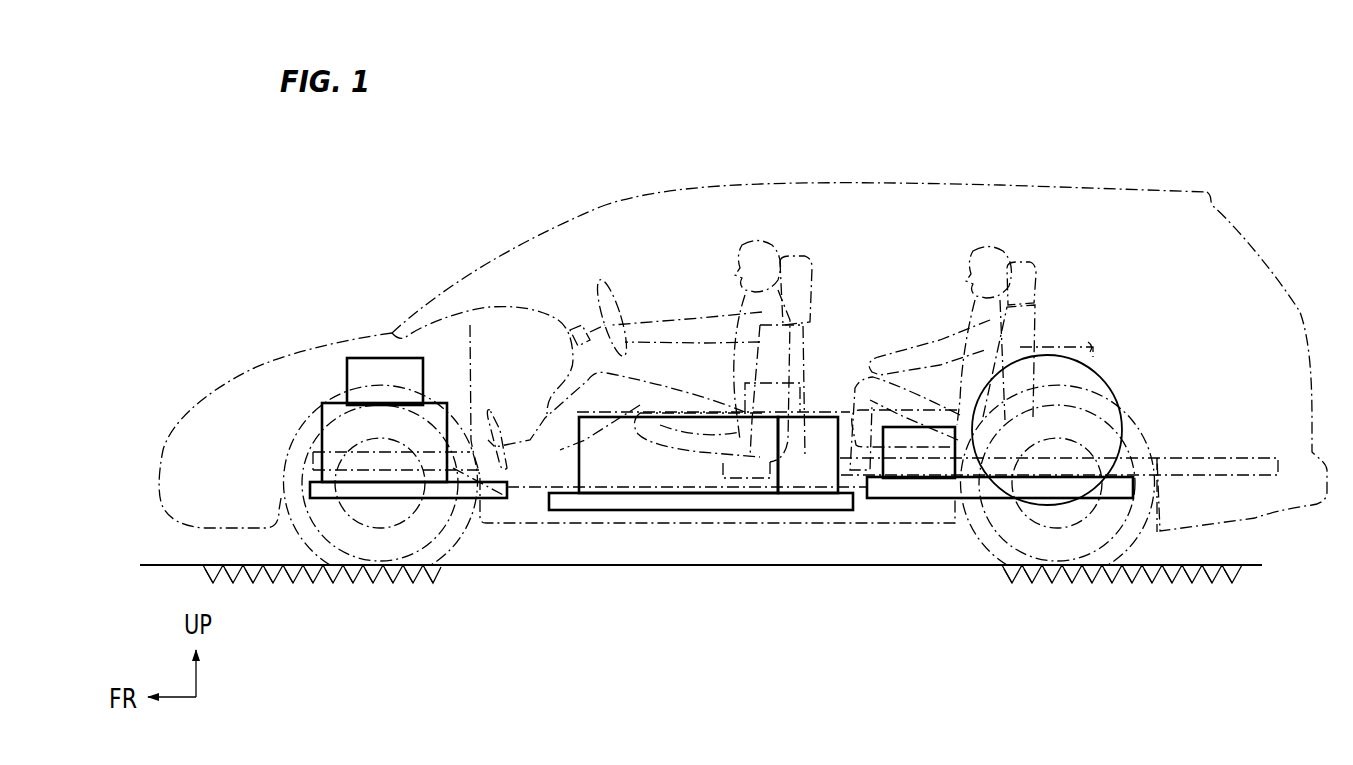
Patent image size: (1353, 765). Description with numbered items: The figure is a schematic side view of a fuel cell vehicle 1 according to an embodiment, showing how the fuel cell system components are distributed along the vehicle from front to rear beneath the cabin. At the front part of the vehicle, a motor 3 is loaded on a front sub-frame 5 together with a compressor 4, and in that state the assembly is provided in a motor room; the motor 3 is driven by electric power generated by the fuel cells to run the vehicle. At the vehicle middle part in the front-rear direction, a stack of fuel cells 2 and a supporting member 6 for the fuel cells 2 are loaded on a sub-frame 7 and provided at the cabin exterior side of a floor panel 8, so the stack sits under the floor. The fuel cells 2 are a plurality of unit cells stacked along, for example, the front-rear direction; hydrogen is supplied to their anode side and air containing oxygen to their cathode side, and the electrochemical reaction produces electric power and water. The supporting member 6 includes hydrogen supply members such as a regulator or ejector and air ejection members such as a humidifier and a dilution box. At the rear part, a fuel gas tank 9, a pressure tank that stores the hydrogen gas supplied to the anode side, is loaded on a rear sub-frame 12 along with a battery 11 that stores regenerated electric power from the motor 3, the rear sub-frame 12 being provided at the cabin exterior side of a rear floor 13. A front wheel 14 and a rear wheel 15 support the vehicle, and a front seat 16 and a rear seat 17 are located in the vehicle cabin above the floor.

The fuel cell vehicle 1 is at (1140, 118).
The fuel cells 2 is at (613, 448).
The motor 3 is at (343, 428).
The compressor 4 is at (375, 372).
The front sub-frame 5 is at (388, 508).
The supporting member 6 is at (812, 475).
The front sub-frame 7 is at (679, 520).
The floor panel 8 is at (705, 457).
The fuel gas tank 9 is at (1095, 382).
The battery 11 is at (913, 437).
The rear sub-frame 12 is at (968, 512).
The rear floor 13 is at (1078, 345).
The front wheel 14 is at (338, 525).
The rear wheel 15 is at (1087, 538).
The front seat 16 is at (798, 330).
The rear seat 17 is at (1003, 417).